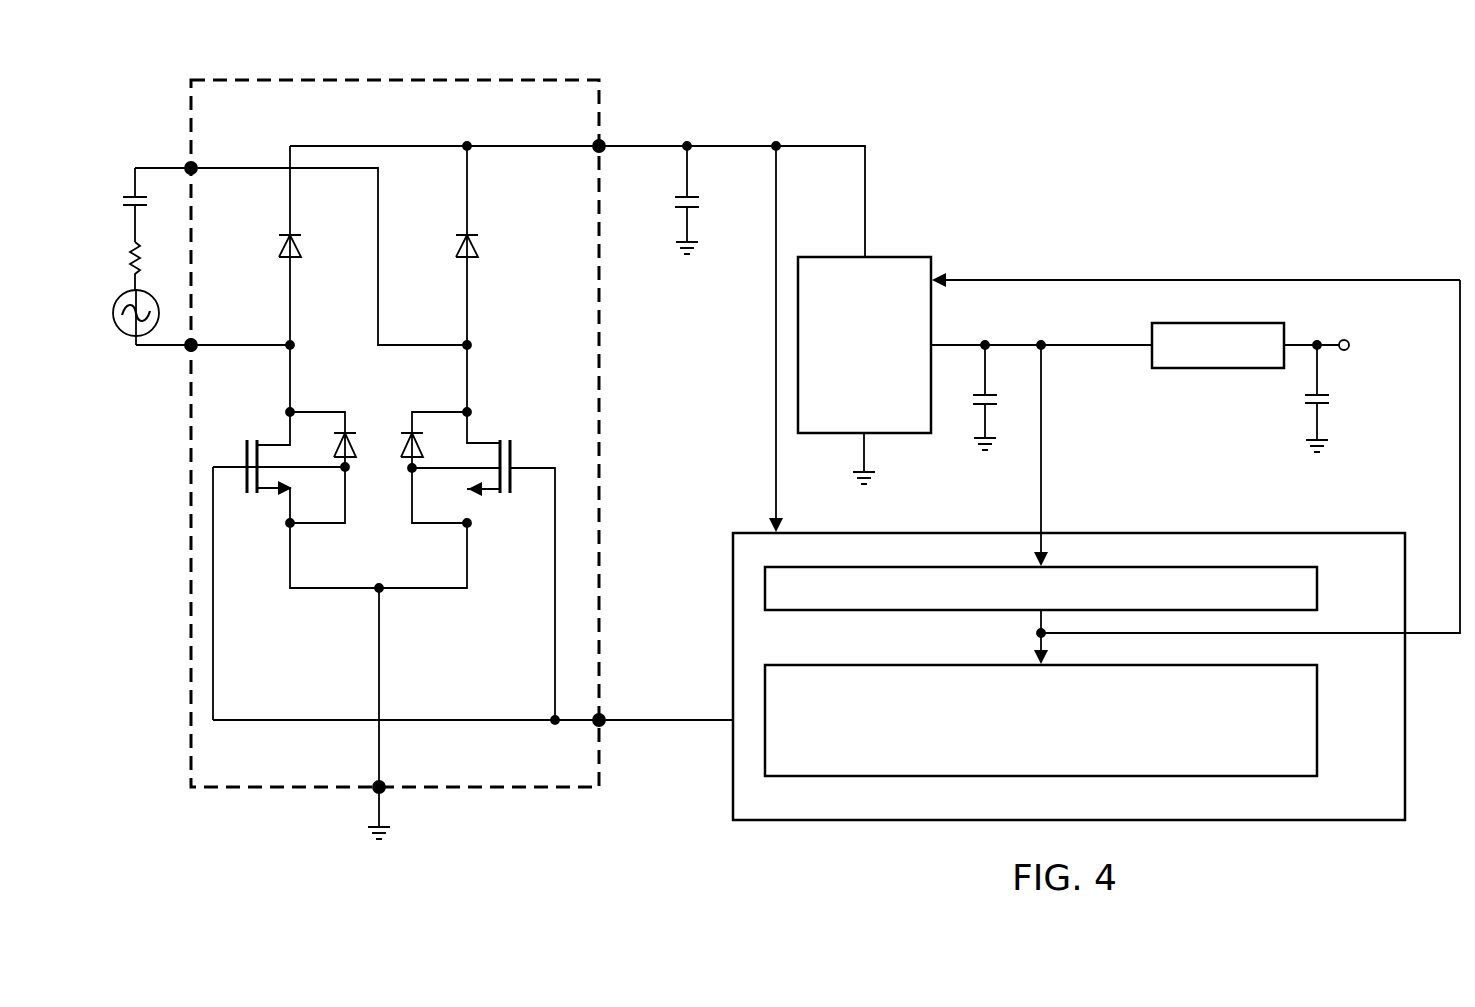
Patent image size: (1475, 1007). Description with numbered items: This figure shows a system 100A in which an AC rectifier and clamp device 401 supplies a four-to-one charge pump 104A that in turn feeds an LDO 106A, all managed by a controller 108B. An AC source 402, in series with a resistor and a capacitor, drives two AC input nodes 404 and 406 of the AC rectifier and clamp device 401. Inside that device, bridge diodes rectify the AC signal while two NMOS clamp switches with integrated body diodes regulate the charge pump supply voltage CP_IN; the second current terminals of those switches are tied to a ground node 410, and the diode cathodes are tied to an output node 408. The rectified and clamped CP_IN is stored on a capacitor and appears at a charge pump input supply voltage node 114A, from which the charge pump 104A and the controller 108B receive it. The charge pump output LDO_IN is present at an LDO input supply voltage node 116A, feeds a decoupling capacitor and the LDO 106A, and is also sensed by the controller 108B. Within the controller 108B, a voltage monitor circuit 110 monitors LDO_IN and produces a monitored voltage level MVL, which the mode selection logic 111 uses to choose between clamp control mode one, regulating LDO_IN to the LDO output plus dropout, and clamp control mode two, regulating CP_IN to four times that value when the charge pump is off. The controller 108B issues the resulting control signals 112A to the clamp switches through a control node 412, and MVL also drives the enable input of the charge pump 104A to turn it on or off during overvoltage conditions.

The system 100A is at (1044, 132).
The AC rectifier and clamp device 401 is at (303, 76).
The AC source 402 is at (128, 338).
The AC input node 404 is at (188, 352).
The AC input node 406 is at (188, 163).
The output node 408 is at (596, 142).
The ground node 410 is at (372, 795).
The control node 412 is at (602, 715).
The 4:1 charge pump 104A is at (897, 257).
The LDO 106A is at (1248, 368).
The controller 108B is at (1200, 820).
The voltage monitor circuit 110 is at (1317, 587).
The mode selection logic 111 is at (1317, 720).
The control signals 112A is at (667, 722).
The charge pump input node CP_IN 114A is at (780, 150).
The LDO input node LDO_IN 116A is at (1043, 348).